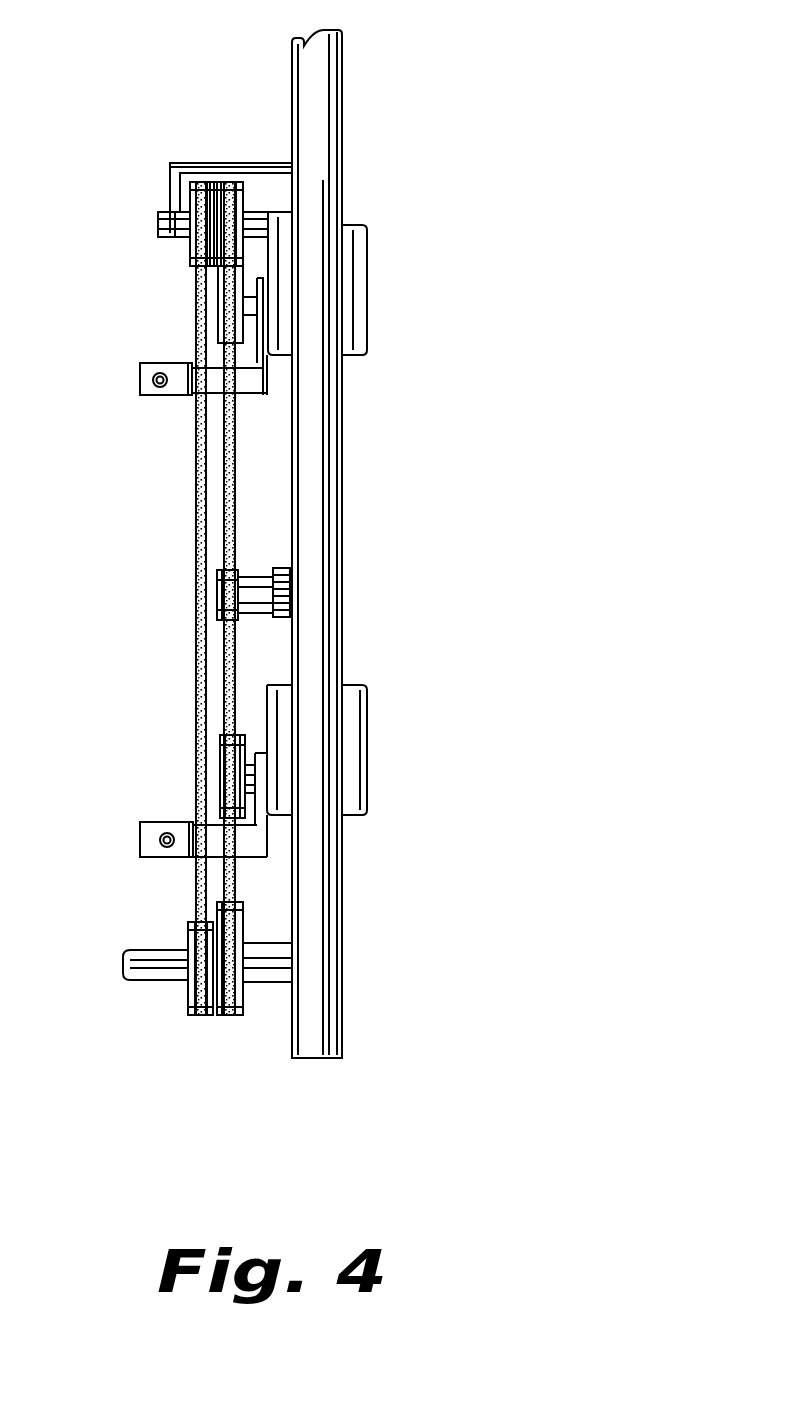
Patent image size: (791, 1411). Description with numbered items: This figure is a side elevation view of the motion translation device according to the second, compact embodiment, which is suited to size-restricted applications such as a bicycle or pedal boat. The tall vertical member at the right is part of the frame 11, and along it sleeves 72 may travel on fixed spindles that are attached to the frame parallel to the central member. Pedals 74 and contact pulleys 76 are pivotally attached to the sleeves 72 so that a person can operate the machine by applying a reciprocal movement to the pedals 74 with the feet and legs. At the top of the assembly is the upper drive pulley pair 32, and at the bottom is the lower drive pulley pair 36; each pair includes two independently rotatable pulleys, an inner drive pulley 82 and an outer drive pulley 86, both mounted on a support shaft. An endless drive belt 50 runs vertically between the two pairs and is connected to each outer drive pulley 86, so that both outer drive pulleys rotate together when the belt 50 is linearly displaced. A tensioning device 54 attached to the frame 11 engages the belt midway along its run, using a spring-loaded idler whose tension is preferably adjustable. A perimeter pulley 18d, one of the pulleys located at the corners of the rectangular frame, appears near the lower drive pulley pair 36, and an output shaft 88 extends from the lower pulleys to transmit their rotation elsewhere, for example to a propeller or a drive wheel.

The frame 11 is at (323, 62).
The upper drive pulley pair 32 is at (158, 170).
The inner drive pulley 82 is at (243, 190).
The outer drive pulley 86 is at (190, 252).
The sleeve 72 is at (368, 258).
The pedal 74 is at (140, 380).
The endless drive belt 50 is at (197, 517).
The tensioning device 54 is at (270, 558).
The contact pulley 76 is at (223, 733).
The output shaft 88 is at (138, 958).
The lower drive pulley pair 36 is at (188, 976).
The perimeter pulley 18d is at (243, 985).